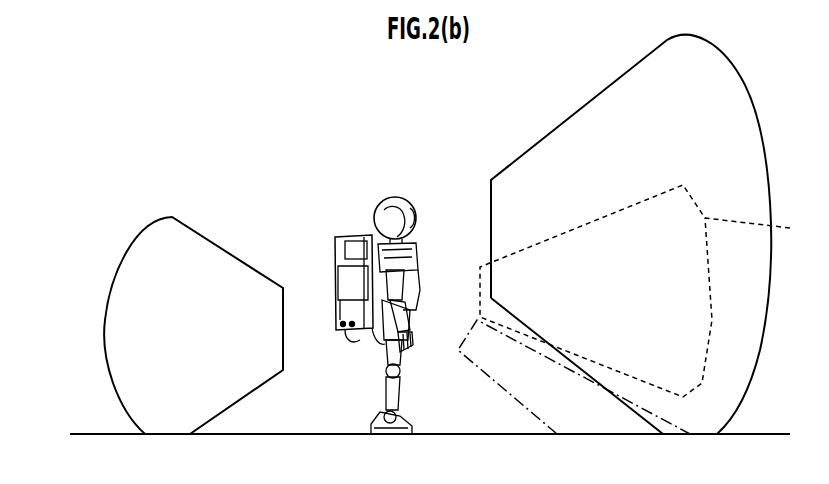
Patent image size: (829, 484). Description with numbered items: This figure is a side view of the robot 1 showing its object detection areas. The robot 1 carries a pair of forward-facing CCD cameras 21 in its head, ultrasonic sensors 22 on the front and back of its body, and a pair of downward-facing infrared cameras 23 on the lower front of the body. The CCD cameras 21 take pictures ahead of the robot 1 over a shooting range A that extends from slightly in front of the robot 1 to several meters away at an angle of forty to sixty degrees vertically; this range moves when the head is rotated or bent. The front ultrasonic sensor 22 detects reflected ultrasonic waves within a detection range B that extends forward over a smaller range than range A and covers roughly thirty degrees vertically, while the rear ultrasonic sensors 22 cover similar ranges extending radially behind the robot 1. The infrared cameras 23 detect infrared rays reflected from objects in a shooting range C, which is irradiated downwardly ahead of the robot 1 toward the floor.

The robot 1 is at (371, 286).
The CCD cameras 21 is at (413, 224).
The ultrasonic sensors 22 is at (419, 293).
The infrared cameras 23 is at (417, 310).
The shooting range A is at (740, 72).
The ultrasonic detection range B is at (646, 291).
The shooting range C is at (683, 432).